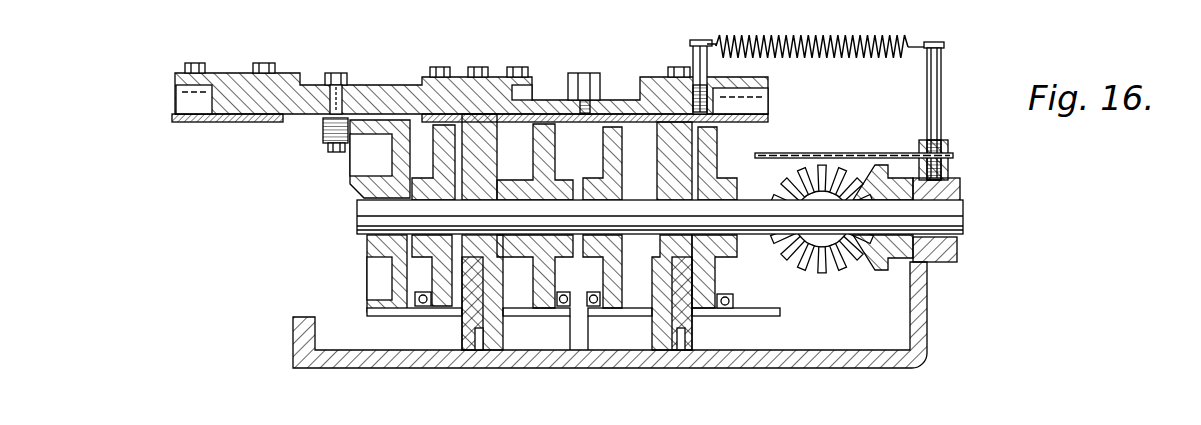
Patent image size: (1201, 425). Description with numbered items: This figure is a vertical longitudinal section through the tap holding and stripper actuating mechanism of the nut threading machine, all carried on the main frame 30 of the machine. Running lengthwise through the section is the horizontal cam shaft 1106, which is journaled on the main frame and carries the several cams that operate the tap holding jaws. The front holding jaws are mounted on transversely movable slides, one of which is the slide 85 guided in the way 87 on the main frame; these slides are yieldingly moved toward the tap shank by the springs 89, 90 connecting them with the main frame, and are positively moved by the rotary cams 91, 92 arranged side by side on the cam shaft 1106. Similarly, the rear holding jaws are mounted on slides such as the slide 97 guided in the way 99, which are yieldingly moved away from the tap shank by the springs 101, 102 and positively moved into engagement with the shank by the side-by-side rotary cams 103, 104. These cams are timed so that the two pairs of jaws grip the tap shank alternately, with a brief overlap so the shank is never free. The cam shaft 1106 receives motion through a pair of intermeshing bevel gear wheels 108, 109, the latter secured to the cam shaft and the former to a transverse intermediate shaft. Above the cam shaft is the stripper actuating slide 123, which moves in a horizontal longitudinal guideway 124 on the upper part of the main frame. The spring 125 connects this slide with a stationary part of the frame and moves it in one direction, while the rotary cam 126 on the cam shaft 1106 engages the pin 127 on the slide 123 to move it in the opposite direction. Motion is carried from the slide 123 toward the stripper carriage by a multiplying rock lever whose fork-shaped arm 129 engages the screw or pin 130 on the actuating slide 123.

The stripper actuating slide 123 is at (297, 92).
The guideway 124 is at (233, 122).
The spring 125 is at (826, 22).
The rotary cam 126 is at (381, 137).
The pin 127 is at (333, 132).
The forked arm 129 is at (573, 88).
The screw or pin 130 is at (592, 95).
The cam shaft 1106 is at (357, 212).
The rotary cam 92 is at (545, 163).
The rotary cam 104 is at (612, 167).
The rotary cam 91 is at (441, 291).
The spring 89 is at (418, 308).
The slide 85 is at (481, 314).
The way 87 is at (476, 348).
The main frame 30 is at (497, 362).
The spring 90 is at (562, 296).
The spring 102 is at (597, 291).
The slide 97 is at (651, 314).
The way 99 is at (675, 348).
The spring 101 is at (720, 310).
The rotary cam 103 is at (713, 285).
The bevel gear wheel 108 is at (807, 270).
The bevel gear wheel 109 is at (870, 268).